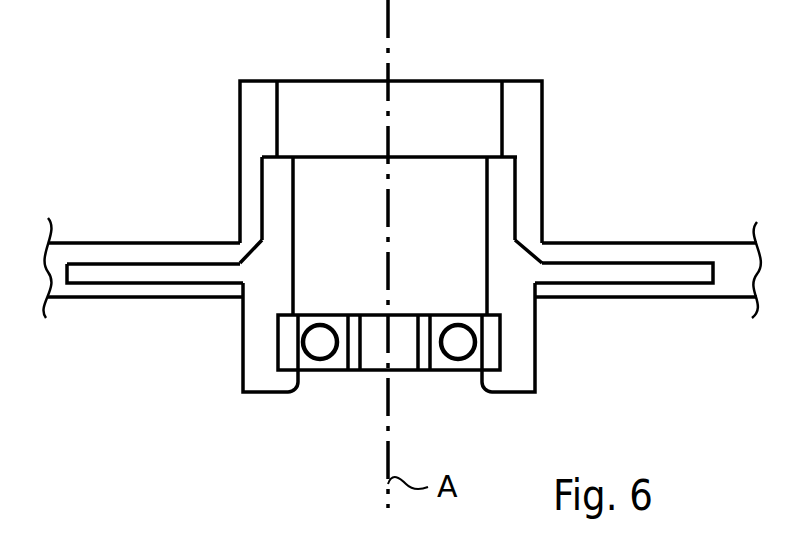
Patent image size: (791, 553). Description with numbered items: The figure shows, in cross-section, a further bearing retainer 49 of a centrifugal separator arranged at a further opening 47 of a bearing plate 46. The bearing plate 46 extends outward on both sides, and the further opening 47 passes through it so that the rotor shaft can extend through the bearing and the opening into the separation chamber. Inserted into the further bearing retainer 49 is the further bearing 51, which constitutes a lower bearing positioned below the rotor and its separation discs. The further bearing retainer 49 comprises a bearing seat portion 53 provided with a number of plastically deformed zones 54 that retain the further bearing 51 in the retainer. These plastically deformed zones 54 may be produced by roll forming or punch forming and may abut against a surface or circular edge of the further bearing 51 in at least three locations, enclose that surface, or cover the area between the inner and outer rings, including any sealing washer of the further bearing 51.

The bearing plate 46 is at (102, 253).
The further opening 47 is at (280, 85).
The further bearing retainer 49 is at (268, 262).
The further bearing 51 is at (340, 458).
The bearing seat portion 53 is at (253, 365).
The plastically deformed zones 54 is at (498, 382).